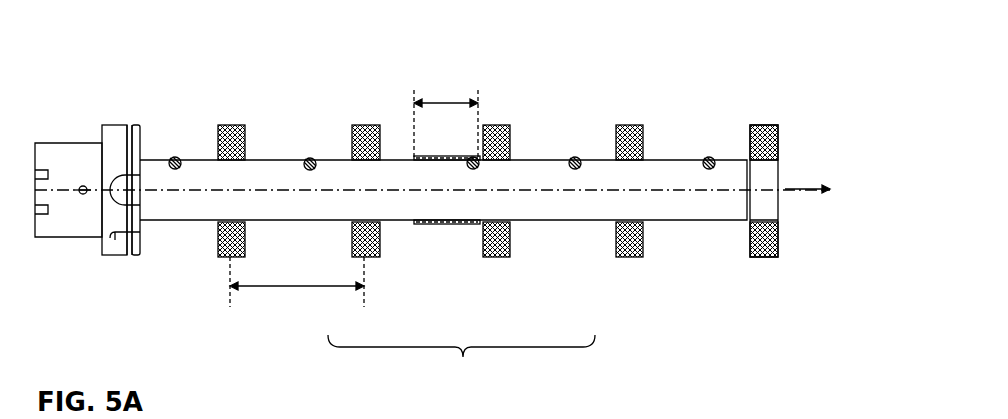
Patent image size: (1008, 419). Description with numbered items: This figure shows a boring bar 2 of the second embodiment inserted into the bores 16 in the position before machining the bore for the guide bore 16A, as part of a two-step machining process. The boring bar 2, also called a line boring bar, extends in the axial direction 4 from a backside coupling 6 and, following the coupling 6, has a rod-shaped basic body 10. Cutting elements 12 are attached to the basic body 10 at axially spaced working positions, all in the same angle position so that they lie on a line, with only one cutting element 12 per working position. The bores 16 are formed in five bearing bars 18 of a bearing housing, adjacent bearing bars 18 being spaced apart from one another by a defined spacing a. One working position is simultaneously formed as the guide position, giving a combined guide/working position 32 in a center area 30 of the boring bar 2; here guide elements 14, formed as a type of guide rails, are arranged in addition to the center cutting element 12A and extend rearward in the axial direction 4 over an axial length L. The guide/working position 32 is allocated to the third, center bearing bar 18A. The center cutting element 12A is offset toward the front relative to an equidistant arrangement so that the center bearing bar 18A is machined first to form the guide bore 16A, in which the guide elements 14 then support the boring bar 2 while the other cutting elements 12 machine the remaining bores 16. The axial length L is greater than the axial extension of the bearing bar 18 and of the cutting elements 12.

The boring bar 2 is at (723, 91).
The axial direction 4 is at (800, 186).
The coupling 6 is at (72, 232).
The basic body 10 is at (176, 212).
The cutting elements 12 is at (176, 156).
The center cutting element 12A is at (473, 156).
The guide elements 14 is at (450, 225).
The bores 16 is at (248, 160).
The guide bore 16A is at (512, 159).
The bearing bars 18 is at (228, 258).
The center bearing bar 18A is at (495, 257).
The center area 30 is at (463, 357).
The guide/working position 32 is at (475, 180).
The axial length L is at (445, 102).
The spacing a is at (293, 288).